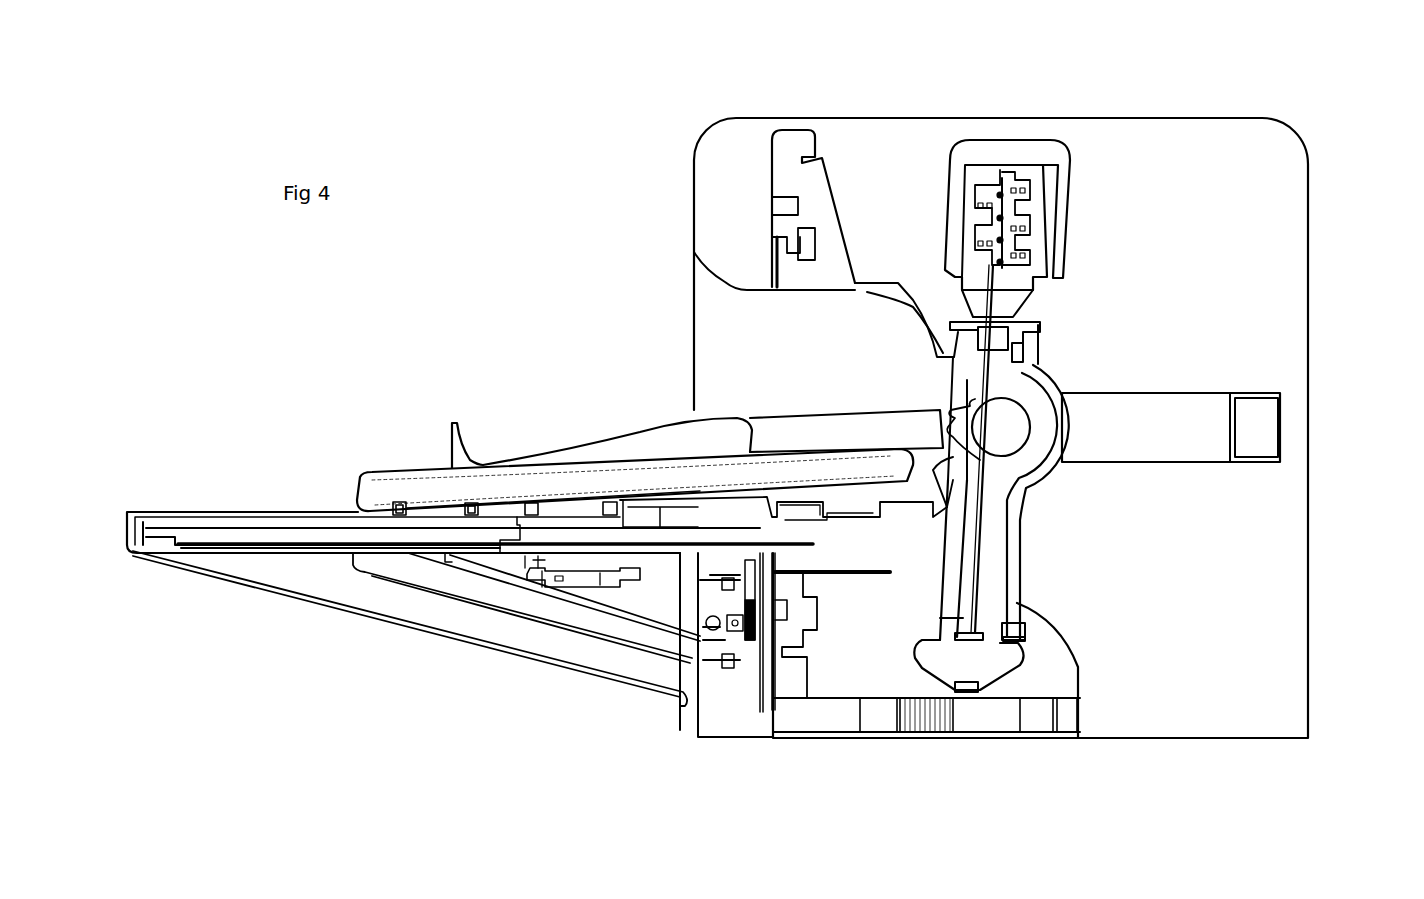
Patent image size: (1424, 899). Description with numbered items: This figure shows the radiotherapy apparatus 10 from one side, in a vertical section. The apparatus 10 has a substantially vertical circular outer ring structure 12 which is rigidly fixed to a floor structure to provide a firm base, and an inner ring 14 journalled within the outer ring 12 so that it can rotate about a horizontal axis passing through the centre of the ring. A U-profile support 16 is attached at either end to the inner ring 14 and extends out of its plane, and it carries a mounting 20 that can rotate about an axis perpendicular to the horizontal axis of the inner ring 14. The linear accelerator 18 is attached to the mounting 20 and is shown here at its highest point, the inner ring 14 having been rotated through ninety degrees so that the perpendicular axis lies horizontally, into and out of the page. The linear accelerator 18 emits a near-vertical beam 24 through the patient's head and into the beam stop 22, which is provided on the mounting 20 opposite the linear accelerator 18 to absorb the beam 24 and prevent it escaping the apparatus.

The apparatus 10 is at (513, 200).
The outer ring structure 12 is at (785, 140).
The inner ring 14 is at (788, 275).
The U-profile support 16 is at (1163, 392).
The linear accelerator 18 is at (1035, 150).
The mounting 20 is at (1019, 527).
The beam stop 22 is at (992, 663).
The beam 24 is at (983, 578).